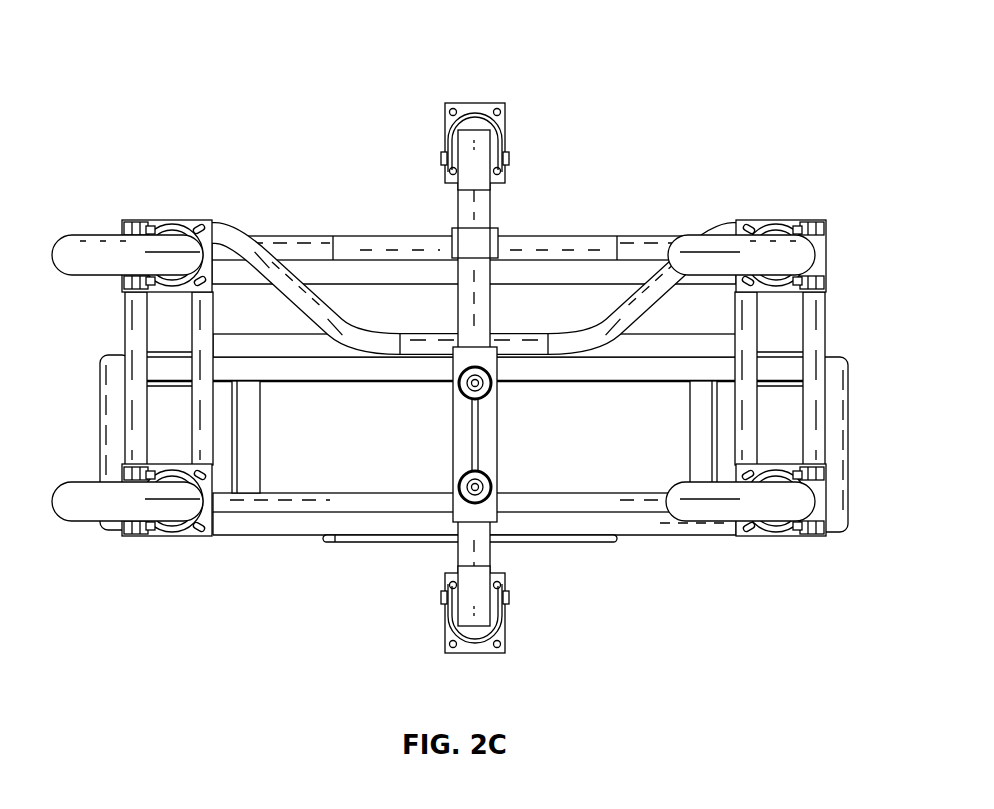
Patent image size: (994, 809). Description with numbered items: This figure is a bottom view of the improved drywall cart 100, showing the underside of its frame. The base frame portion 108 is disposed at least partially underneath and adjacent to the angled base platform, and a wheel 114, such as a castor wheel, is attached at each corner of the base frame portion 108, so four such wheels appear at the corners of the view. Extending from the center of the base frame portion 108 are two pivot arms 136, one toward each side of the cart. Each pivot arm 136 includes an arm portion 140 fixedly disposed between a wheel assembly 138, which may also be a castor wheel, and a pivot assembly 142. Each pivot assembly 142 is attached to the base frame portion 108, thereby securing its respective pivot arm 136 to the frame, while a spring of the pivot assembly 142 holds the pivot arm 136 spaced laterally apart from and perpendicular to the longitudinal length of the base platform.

The drywall cart 100 is at (135, 50).
The base frame portion 108 is at (100, 370).
The wheel 114 is at (658, 484).
The pivot arm 136 is at (524, 199).
The wheel assembly 138 is at (447, 125).
The arm portion 140 is at (468, 222).
The pivot assembly 142 is at (499, 388).